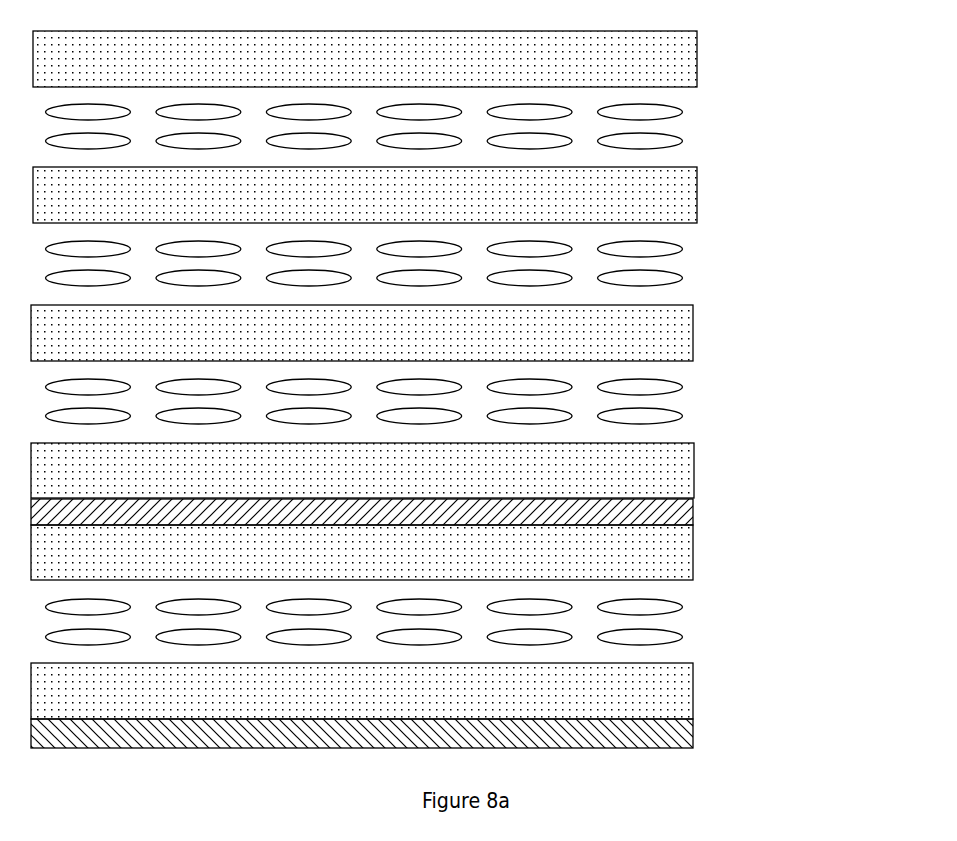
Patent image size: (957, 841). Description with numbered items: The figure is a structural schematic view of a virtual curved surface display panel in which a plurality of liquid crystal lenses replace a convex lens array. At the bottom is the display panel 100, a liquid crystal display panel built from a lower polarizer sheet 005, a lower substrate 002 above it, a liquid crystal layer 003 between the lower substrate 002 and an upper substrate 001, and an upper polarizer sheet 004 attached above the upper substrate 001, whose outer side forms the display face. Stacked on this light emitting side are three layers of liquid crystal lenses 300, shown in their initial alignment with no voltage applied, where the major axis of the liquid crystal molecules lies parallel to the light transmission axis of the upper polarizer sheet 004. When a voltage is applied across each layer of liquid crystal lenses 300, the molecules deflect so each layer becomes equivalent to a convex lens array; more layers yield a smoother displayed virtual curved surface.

The liquid crystal lens 300 is at (712, 335).
The display panel 100 is at (451, 623).
The upper polarizer sheet 004 is at (693, 514).
The upper substrate 001 is at (693, 551).
The liquid crystal layer 003 is at (693, 619).
The lower substrate 002 is at (693, 691).
The lower polarizer sheet 005 is at (408, 732).